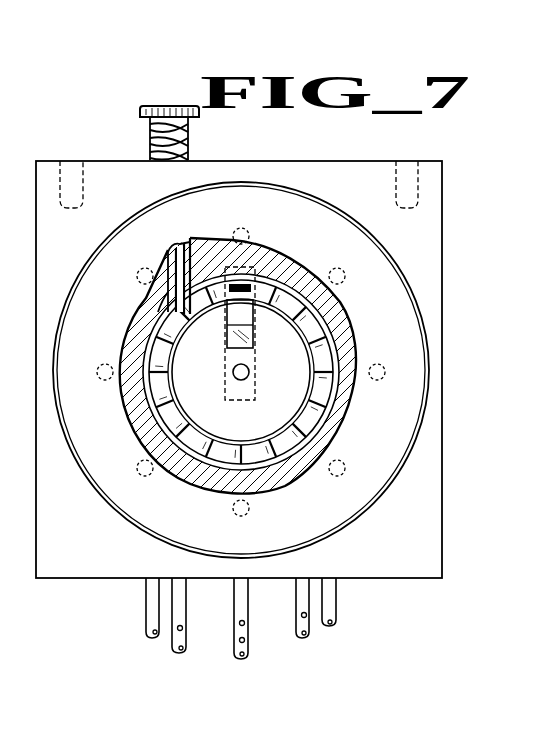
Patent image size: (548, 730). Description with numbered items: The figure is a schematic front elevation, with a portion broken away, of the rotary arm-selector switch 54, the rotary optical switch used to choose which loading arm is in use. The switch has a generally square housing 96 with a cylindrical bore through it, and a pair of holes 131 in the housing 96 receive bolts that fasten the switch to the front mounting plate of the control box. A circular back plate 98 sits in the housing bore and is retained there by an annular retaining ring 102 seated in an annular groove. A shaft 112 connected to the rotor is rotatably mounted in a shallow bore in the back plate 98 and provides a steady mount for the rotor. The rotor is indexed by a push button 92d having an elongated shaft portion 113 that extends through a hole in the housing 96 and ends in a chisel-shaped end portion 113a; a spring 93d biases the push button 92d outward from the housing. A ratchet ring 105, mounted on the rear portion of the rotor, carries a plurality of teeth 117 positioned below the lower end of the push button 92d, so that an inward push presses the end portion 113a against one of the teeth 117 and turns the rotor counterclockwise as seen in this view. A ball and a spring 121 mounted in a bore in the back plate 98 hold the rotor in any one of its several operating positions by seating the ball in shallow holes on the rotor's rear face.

The rotary arm-selector switch 54 is at (60, 582).
The push button 92d is at (162, 106).
The spring 93d is at (190, 134).
The housing 96 is at (345, 172).
The back plate 98 is at (332, 247).
The retaining ring 102 is at (130, 522).
The ratchet ring 105 is at (162, 411).
The shaft 112 is at (232, 372).
The elongated shaft portion 113 is at (174, 252).
The chisel-shaped end portion 113a is at (172, 312).
The teeth 117 is at (306, 320).
The spring 121 is at (375, 385).
The holes 131 is at (70, 168).